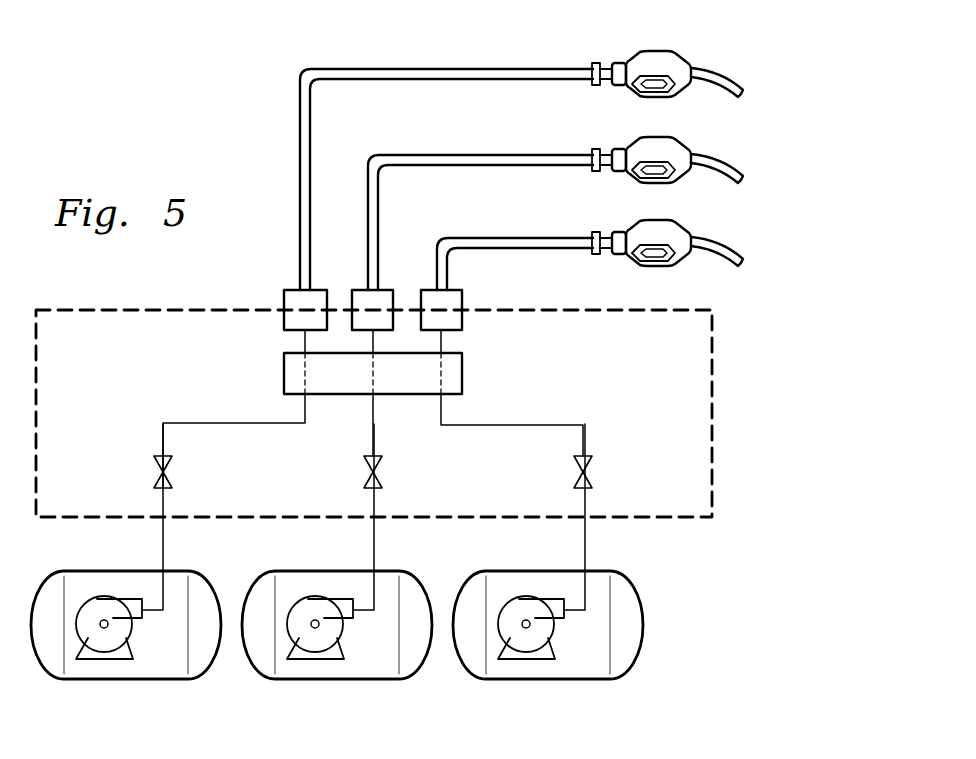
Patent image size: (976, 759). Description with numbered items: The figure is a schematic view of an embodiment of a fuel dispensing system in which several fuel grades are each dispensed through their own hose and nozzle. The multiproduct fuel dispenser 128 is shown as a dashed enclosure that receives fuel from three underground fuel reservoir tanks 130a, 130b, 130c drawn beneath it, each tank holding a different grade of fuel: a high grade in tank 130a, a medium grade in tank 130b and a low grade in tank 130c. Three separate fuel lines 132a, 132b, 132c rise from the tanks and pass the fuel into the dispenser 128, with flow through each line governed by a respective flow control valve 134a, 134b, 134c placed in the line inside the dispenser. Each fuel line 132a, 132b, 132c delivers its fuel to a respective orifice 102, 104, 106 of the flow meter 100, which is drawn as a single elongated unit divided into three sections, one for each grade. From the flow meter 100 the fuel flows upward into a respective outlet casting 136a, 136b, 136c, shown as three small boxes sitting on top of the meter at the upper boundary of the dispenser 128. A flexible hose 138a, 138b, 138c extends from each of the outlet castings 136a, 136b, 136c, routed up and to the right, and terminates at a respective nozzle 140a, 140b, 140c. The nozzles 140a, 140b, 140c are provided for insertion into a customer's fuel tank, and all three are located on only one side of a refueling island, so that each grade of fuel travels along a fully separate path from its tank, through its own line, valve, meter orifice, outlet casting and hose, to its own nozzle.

The flow meter 100 is at (367, 386).
The orifice 102 is at (302, 372).
The orifice 104 is at (371, 376).
The orifice 106 is at (446, 374).
The multiproduct fuel dispenser 128 is at (724, 438).
The underground fuel reservoir tank 130a is at (125, 680).
The underground fuel reservoir tank 130b is at (335, 680).
The underground fuel reservoir tank 130c is at (555, 680).
The fuel line 132a is at (165, 440).
The fuel line 132b is at (375, 440).
The fuel line 132c is at (585, 440).
The flow control valve 134a is at (156, 470).
The flow control valve 134b is at (366, 470).
The flow control valve 134c is at (576, 470).
The outlet casting 136a is at (295, 289).
The outlet casting 136b is at (365, 289).
The outlet casting 136c is at (433, 289).
The flexible hose 138a is at (458, 69).
The flexible hose 138b is at (494, 155).
The flexible hose 138c is at (528, 238).
The nozzle 140a is at (684, 56).
The nozzle 140b is at (684, 142).
The nozzle 140c is at (684, 225).